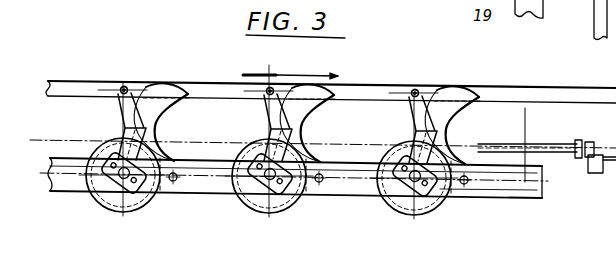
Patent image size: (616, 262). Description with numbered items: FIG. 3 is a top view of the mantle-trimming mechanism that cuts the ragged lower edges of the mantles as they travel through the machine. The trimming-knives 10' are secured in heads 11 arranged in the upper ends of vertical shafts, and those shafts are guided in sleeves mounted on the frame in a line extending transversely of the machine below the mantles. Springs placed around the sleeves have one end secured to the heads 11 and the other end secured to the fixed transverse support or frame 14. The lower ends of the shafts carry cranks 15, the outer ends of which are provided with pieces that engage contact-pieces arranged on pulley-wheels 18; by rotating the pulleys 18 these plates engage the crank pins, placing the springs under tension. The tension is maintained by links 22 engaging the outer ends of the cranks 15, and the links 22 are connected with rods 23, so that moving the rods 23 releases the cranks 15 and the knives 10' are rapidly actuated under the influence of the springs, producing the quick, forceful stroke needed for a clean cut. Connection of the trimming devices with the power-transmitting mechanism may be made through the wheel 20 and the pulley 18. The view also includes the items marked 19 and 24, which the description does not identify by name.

The trimming-knife 10' is at (331, 83).
The head 11 is at (125, 207).
The fixed transverse support or frame 14 is at (346, 184).
The crank 15 is at (127, 133).
The pulley-wheel 18 is at (143, 204).
The guide line / rod 19 is at (343, 148).
The wheel 20 is at (546, 145).
The link 22 is at (163, 134).
The rod 23 is at (412, 91).
The direction arrow 24 is at (290, 68).